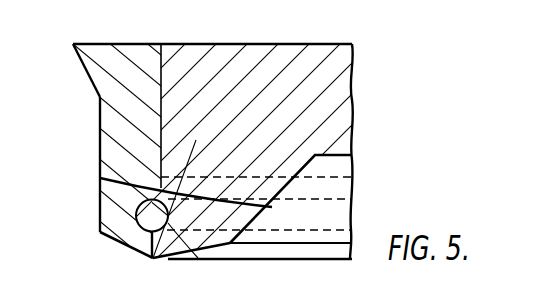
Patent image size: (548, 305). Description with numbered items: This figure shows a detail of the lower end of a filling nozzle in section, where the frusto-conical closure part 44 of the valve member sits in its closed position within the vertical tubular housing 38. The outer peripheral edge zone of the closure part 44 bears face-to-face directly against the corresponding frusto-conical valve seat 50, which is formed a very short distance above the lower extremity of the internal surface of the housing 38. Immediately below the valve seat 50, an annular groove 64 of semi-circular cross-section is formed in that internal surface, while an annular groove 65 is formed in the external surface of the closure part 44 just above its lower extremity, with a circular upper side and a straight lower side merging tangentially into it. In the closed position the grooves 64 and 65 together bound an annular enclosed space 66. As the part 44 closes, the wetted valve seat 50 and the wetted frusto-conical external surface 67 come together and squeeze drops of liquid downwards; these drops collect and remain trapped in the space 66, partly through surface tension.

The vertical tubular housing 38 is at (98, 72).
The frusto-conical closure part 44 is at (328, 68).
The frusto-conical valve seat 50 is at (266, 206).
The annular groove 64 is at (131, 251).
The annular groove 65 is at (197, 260).
The annular enclosed space 66 is at (147, 216).
The frusto-conical external surface 67 is at (100, 178).